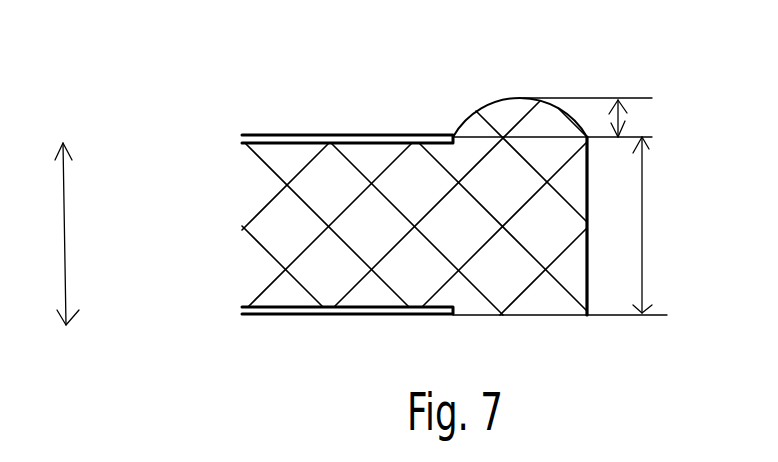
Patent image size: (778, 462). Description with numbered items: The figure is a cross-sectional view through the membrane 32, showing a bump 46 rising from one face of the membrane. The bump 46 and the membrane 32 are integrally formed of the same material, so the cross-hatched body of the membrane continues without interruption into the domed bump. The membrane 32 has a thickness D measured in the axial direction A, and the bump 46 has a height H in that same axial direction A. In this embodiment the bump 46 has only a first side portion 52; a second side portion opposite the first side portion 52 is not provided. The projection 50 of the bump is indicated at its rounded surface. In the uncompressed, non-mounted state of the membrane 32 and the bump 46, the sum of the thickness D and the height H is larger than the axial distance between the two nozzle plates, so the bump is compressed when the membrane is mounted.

The membrane 32 is at (222, 152).
The bump 46 is at (508, 86).
The second projection 50 is at (479, 118).
The first side portion 52 is at (500, 118).
The axial direction A is at (65, 245).
The height H is at (625, 117).
The thickness D is at (645, 230).